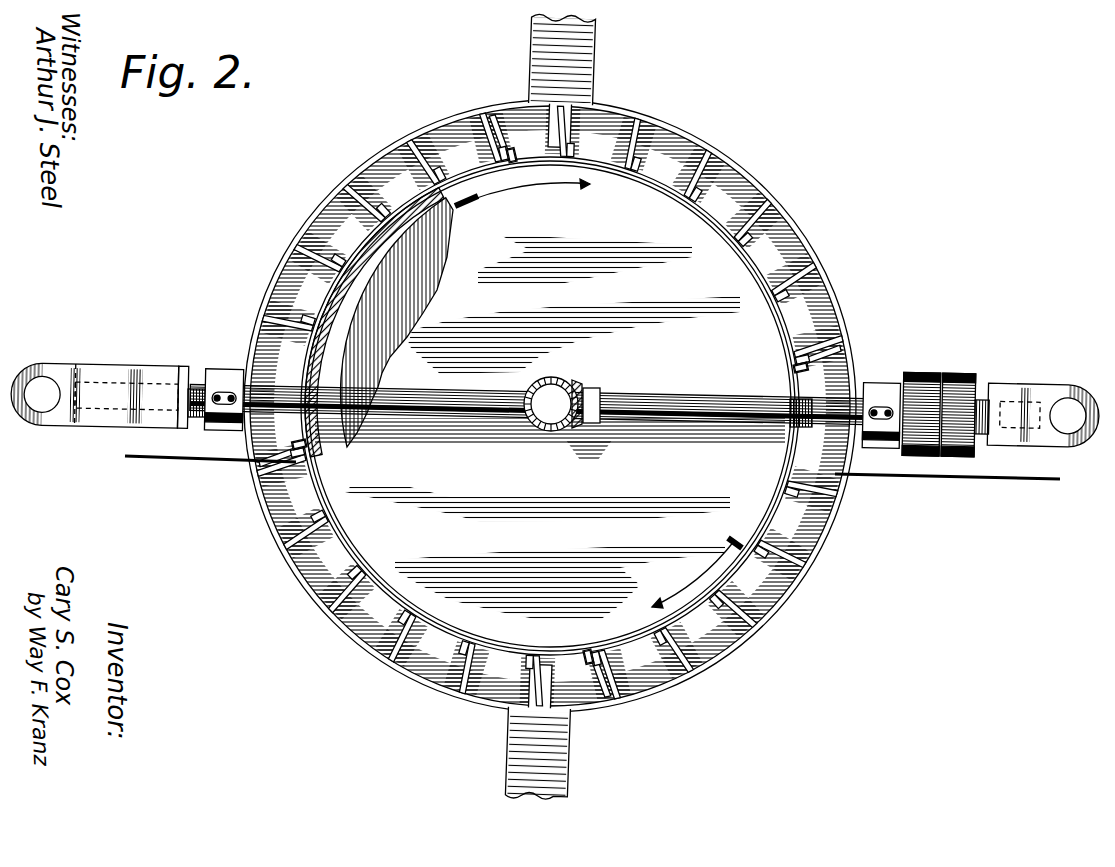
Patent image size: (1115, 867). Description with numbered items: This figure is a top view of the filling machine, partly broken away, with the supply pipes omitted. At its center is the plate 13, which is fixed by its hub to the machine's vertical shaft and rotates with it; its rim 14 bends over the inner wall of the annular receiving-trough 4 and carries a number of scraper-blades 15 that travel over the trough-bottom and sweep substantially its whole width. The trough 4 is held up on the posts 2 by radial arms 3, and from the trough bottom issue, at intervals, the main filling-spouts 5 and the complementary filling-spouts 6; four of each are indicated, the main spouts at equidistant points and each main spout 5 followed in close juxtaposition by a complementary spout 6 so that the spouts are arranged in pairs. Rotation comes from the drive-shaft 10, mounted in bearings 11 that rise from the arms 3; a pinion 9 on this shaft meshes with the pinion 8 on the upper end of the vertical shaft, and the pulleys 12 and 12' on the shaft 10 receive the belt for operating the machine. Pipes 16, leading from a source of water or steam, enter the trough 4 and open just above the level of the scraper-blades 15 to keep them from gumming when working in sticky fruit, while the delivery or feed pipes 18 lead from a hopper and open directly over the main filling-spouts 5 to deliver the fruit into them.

The posts 2 is at (554, 405).
The radial arms 3 is at (567, 62).
The annular receiving-trough 4 is at (737, 196).
The main filling-spouts 5 is at (494, 128).
The complementary filling-spouts 6 is at (590, 106).
The pinion 8 is at (560, 388).
The pinion 9 is at (594, 390).
The drive-shaft 10 is at (682, 400).
The bearings 11 is at (220, 388).
The pulley 12 is at (923, 398).
The pulley 12' is at (966, 398).
The plate 13 is at (550, 406).
The rim 14 is at (348, 322).
The scraper-blades 15 is at (362, 196).
The pipes 16 is at (172, 460).
The delivery or feed pipes 18 is at (838, 338).